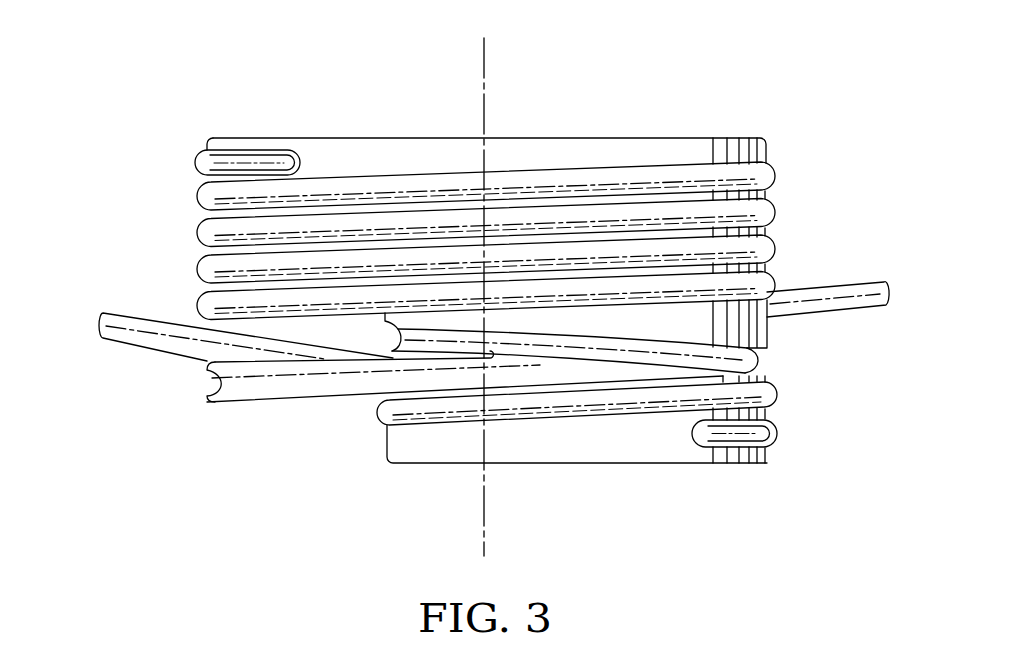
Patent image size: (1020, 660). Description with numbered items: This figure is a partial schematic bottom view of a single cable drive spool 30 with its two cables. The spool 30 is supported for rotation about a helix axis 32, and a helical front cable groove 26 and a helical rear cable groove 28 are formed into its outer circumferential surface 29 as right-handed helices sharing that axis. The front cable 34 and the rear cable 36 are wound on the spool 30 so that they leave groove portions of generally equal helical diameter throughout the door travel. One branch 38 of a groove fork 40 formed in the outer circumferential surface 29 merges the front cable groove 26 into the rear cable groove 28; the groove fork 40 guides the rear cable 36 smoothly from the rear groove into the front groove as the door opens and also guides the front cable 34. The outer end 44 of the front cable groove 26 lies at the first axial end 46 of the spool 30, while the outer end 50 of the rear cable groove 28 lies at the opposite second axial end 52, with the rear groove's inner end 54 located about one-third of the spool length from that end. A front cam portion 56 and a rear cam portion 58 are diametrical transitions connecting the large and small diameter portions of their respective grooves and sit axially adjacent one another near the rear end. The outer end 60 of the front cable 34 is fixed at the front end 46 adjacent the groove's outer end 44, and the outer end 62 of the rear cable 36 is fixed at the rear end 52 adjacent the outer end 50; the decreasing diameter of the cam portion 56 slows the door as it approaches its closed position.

The helical front cable groove 26 is at (200, 148).
The helical rear cable groove 28 is at (310, 385).
The outer circumferential surface 29 is at (768, 146).
The spool 30 is at (674, 156).
The helix axis 32 is at (490, 41).
The front cable 34 is at (818, 288).
The rear cable 36 is at (158, 328).
The branch of groove fork 38 is at (447, 378).
The groove fork 40 is at (543, 360).
The outer end of front cable groove 44 is at (265, 157).
The first axial end of spool 46 is at (560, 135).
The outer end of rear cable groove 50 is at (705, 448).
The second axial end of spool 52 is at (467, 468).
The inner end of rear cable groove 54 is at (497, 372).
The front cam portion 56 is at (410, 345).
The rear cam portion 58 is at (430, 423).
The outer end of front cable 60 is at (292, 138).
The outer end of rear cable 62 is at (737, 432).